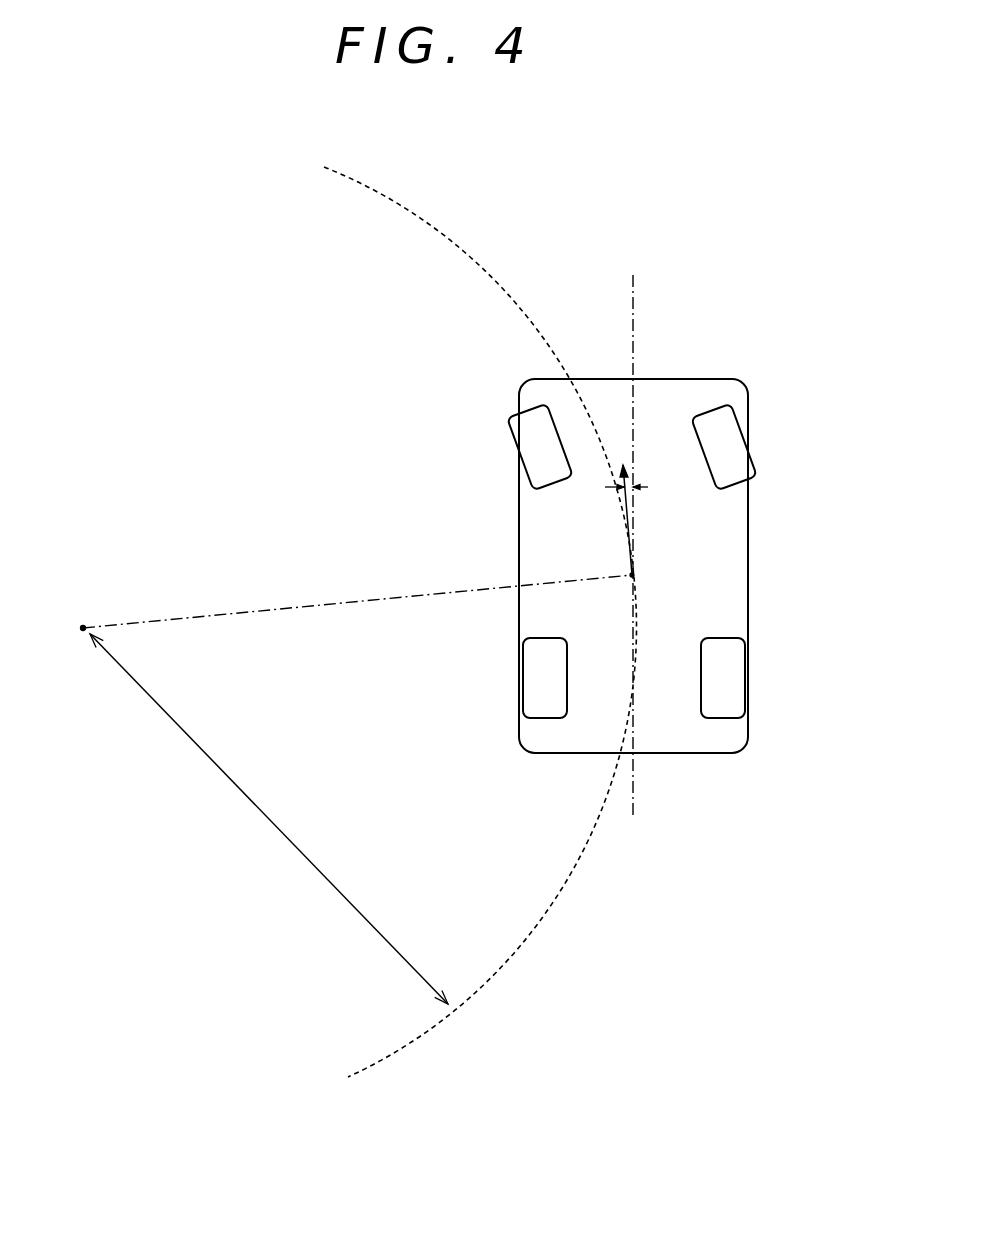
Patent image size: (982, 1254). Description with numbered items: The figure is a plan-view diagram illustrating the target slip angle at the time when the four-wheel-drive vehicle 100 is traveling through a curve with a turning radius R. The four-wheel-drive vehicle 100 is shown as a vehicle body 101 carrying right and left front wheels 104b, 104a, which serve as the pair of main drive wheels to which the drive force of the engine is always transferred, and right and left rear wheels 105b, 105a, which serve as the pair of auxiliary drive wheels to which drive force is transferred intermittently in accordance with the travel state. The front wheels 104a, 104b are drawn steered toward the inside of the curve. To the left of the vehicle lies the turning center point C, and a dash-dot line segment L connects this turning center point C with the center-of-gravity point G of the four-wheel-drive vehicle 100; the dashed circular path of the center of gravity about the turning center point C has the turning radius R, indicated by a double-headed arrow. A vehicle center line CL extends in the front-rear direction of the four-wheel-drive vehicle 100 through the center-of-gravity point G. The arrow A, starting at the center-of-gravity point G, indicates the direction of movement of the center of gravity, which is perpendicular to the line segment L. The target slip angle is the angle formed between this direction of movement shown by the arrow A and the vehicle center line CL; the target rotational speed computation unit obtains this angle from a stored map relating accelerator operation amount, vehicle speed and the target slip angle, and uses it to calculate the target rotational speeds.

The four-wheel-drive vehicle 100 is at (635, 524).
The vehicle body 101 is at (748, 552).
The left front wheel 104a is at (511, 412).
The right front wheel 104b is at (738, 415).
The left rear wheel 105a is at (521, 700).
The right rear wheel 105b is at (746, 700).
The vehicle center line CL is at (637, 294).
The turning center point C is at (82, 627).
The line segment L is at (347, 602).
The turning radius R is at (269, 819).
The center-of-gravity point G is at (634, 573).
The arrow A is at (623, 508).